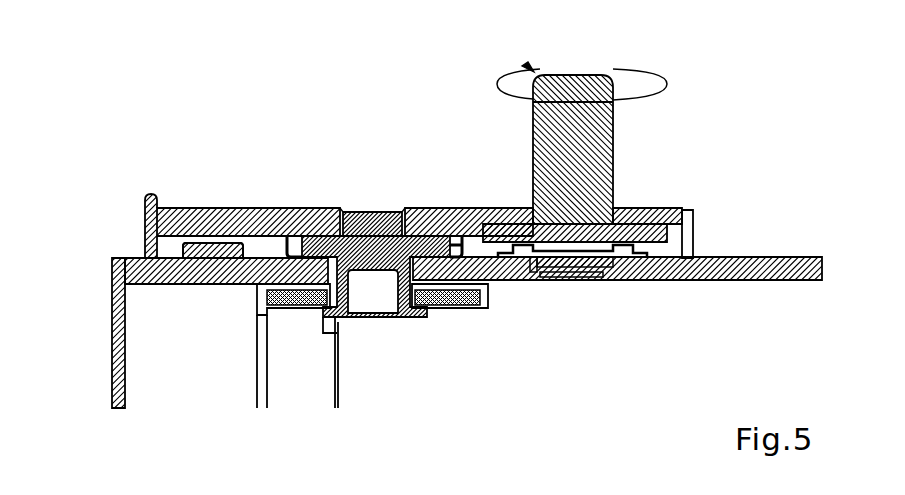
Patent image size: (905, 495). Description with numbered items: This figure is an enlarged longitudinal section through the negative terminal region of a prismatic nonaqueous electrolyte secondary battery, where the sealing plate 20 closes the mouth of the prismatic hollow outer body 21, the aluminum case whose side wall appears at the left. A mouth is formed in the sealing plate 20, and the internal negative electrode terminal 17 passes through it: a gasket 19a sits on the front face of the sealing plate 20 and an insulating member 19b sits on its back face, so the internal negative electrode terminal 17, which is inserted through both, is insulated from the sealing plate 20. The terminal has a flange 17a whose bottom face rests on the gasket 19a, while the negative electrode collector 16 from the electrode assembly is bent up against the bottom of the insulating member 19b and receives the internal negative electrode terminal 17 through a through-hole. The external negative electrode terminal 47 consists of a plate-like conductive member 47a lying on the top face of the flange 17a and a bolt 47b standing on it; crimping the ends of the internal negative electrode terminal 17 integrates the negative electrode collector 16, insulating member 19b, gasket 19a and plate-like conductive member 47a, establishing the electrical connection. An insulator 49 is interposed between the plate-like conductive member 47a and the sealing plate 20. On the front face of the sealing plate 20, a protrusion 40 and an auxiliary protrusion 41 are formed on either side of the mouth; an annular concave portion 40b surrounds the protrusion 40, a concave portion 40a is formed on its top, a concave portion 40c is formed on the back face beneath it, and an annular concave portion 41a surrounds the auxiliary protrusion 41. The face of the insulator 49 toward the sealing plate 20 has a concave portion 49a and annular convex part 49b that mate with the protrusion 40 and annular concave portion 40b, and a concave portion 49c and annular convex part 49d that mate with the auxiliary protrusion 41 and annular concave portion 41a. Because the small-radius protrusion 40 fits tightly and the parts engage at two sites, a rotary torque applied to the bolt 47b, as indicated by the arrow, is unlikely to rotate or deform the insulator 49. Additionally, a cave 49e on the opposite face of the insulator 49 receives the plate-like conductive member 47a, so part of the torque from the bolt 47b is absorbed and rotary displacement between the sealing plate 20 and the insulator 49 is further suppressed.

The negative electrode collector 16 is at (335, 393).
The internal negative electrode terminal 17 is at (386, 202).
The flange 17a is at (427, 250).
The gasket 19a is at (441, 318).
The insulating member 19b is at (262, 318).
The sealing plate 20 is at (790, 282).
The prismatic hollow outer body 21 is at (112, 378).
The protrusion 40 is at (614, 283).
The concave portion 40a is at (560, 283).
The annular concave portion 40b is at (512, 283).
The concave portion 40c is at (583, 283).
The auxiliary protrusion 41 is at (204, 286).
The annular concave portion 41a is at (153, 285).
The external negative electrode terminal 47 is at (293, 166).
The plate-like conductive member 47a is at (318, 202).
The bolt 47b is at (640, 73).
The insulator 49 is at (143, 236).
The concave portion 49a is at (603, 224).
The annular convex part 49b is at (503, 224).
The concave portion 49c is at (215, 258).
The annular convex part 49d is at (177, 256).
The cave 49e is at (143, 198).